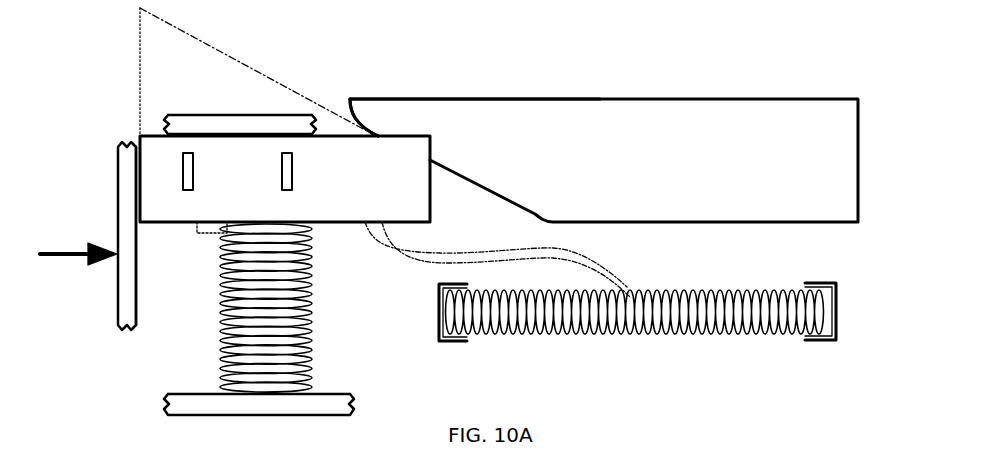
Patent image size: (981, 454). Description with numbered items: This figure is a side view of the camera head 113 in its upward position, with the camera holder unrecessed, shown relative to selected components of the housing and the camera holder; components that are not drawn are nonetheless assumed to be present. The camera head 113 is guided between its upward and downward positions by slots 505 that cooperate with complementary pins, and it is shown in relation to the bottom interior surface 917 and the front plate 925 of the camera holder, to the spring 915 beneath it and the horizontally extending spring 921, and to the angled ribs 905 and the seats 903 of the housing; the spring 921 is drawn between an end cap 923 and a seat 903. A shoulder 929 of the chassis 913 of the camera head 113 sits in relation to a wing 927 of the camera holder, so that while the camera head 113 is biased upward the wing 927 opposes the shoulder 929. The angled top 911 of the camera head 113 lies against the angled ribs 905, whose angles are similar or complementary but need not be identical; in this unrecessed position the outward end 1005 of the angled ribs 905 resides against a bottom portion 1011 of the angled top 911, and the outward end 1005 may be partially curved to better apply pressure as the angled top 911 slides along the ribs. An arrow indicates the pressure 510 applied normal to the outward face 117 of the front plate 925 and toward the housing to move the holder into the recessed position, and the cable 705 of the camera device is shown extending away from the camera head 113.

The camera head 113 is at (140, 53).
The angled top 911 is at (203, 43).
The chassis 913 is at (285, 179).
The wing 927 is at (247, 115).
The slots 505 is at (280, 187).
The bottom portion 1011 is at (343, 127).
The angled ribs 905 is at (473, 182).
The outward end 1005 is at (413, 135).
The shoulder 929 is at (460, 100).
The outward face 117 is at (117, 187).
The front plate 925 is at (117, 233).
The pressure 510 is at (82, 258).
The spring 915 is at (230, 318).
The bottom interior surface 917 is at (185, 393).
The cable 705 is at (437, 262).
The left spring cap 923 is at (437, 335).
The spring 921 is at (625, 320).
The seats 903 is at (837, 327).